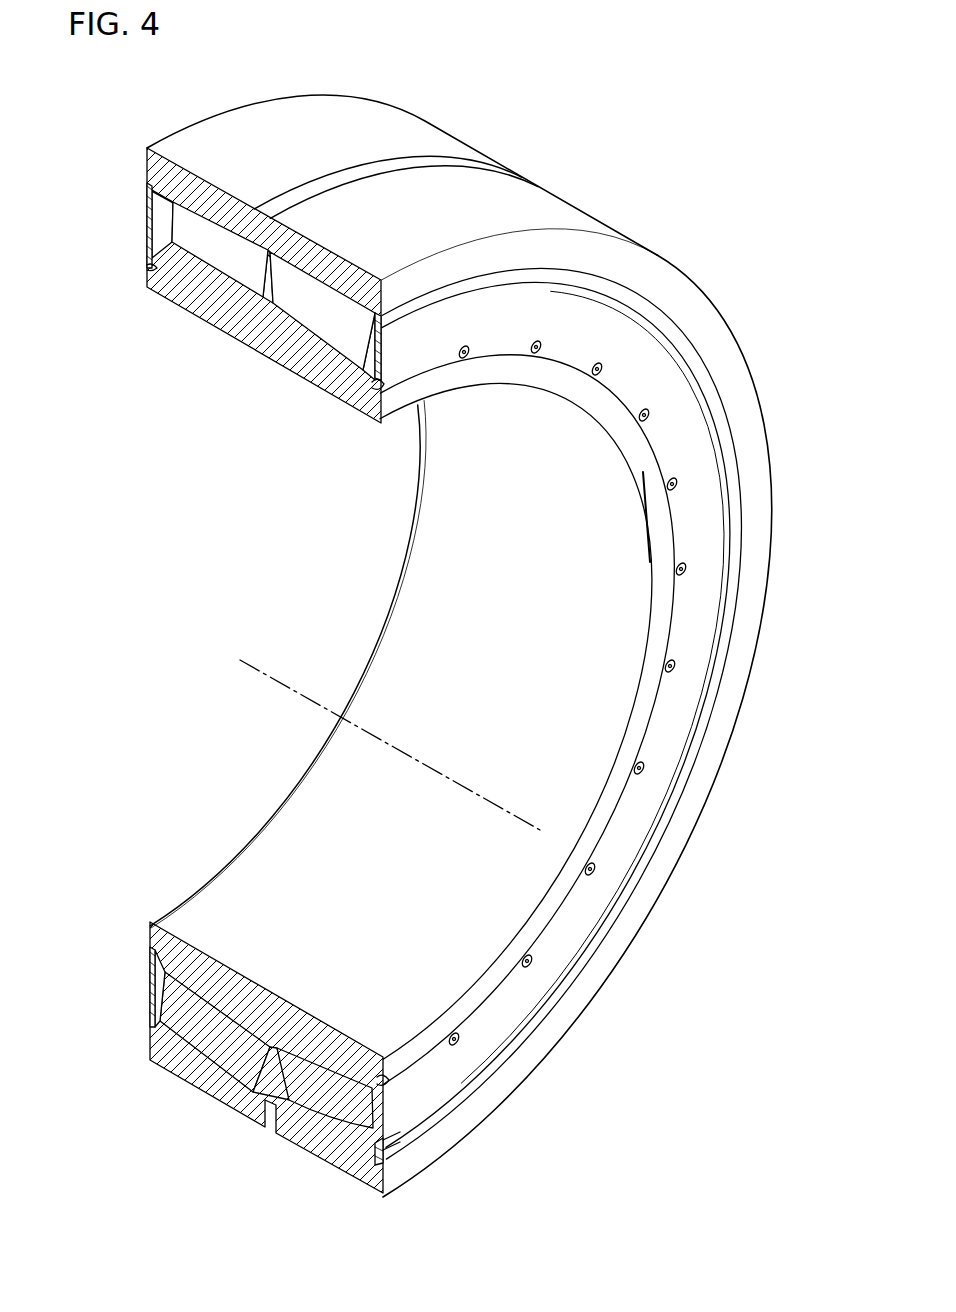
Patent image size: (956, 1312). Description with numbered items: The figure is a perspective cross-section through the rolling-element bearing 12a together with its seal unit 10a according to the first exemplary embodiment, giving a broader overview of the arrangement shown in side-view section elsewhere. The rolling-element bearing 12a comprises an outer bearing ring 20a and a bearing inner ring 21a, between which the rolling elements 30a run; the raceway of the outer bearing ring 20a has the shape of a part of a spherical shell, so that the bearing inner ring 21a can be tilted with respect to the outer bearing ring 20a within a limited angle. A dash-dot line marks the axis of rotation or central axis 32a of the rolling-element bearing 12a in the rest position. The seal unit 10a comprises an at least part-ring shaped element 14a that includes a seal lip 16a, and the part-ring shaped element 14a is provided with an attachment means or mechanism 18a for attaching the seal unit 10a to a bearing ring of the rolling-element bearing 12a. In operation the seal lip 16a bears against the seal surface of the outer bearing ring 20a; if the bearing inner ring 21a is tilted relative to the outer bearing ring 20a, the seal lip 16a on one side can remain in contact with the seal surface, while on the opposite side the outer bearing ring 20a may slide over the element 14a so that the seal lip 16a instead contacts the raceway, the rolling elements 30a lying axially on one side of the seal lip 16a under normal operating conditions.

The seal unit 10a is at (683, 442).
The rolling-element bearing 12a is at (637, 106).
The at least part-ring shaped element 14a is at (690, 716).
The seal lip 16a is at (408, 1152).
The attachment means or mechanism 18a is at (668, 492).
The outer bearing ring 20a is at (147, 170).
The bearing inner ring 21a is at (197, 310).
The rolling elements 30a is at (223, 237).
The central axis 32a is at (262, 660).